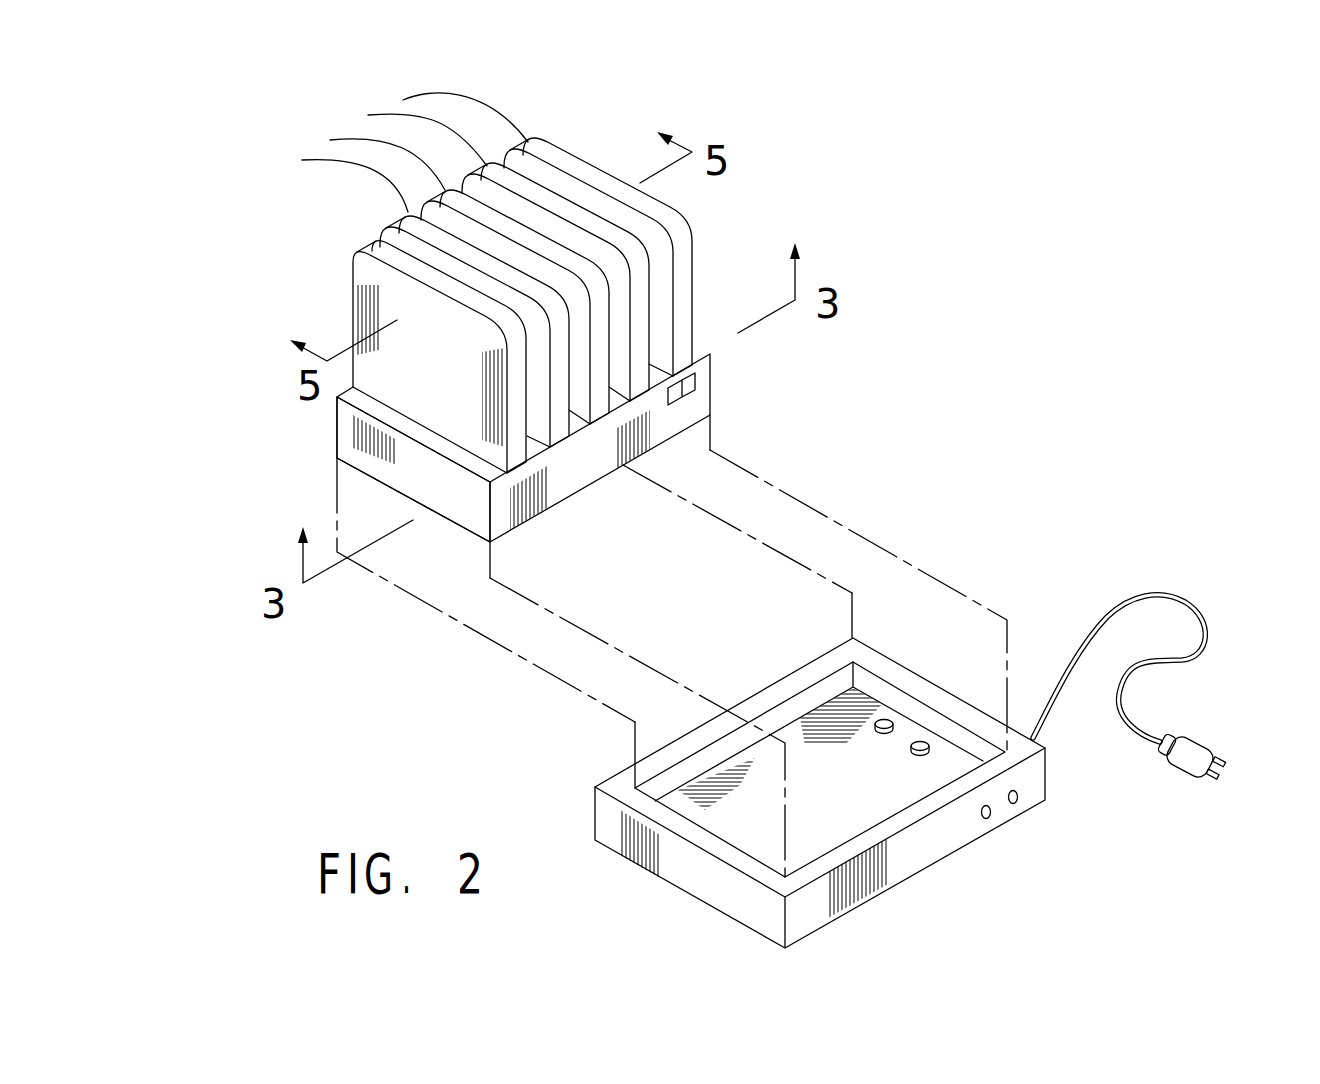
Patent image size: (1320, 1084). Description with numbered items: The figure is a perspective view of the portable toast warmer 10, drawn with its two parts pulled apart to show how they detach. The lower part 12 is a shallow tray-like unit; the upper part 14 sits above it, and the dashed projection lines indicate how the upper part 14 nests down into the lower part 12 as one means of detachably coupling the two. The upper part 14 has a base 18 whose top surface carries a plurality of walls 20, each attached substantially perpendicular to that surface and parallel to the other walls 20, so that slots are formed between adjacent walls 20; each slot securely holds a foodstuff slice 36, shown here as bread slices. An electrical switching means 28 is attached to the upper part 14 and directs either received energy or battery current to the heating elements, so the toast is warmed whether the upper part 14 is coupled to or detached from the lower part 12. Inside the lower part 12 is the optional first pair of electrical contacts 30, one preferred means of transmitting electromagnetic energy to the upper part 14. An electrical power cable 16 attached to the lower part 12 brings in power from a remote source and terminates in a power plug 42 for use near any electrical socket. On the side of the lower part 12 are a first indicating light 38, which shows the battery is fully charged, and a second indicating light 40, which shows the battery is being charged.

The portable toast warmer 10 is at (962, 320).
The lower part 12 is at (718, 890).
The upper part 14 is at (337, 413).
The electrical power cable 16 is at (1128, 607).
The base 18 is at (412, 475).
The wall 20 is at (383, 292).
The electrical switching means 28 is at (695, 373).
The first pair of electrical contacts 30 is at (921, 743).
The foodstuff slice 36 is at (403, 100).
The first indicating light 38 is at (1019, 797).
The second indicating light 40 is at (990, 814).
The plug 42 is at (1182, 738).